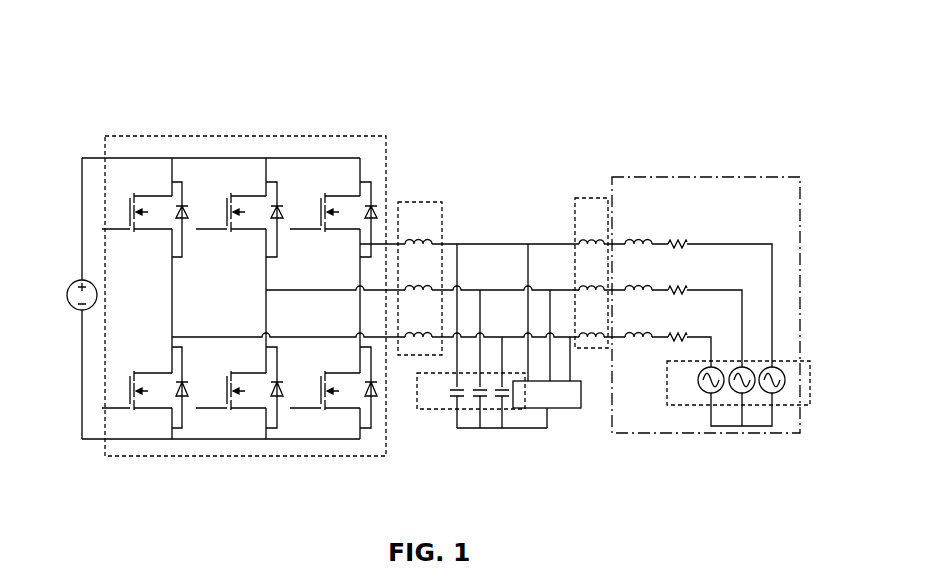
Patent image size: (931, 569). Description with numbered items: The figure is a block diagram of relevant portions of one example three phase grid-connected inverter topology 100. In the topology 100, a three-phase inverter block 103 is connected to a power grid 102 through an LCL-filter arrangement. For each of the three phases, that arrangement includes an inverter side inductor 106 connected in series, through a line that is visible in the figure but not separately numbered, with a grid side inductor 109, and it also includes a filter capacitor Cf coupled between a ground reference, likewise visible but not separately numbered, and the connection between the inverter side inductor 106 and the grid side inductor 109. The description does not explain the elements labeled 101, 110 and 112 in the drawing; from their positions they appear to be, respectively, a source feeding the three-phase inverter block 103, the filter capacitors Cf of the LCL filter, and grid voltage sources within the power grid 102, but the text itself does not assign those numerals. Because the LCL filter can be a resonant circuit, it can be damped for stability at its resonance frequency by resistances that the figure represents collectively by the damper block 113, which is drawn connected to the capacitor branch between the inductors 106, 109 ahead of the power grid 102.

The three phase grid-connected inverter topology 100 is at (741, 75).
The DC source 101 is at (78, 310).
The power grid 102 is at (772, 177).
The three-phase inverter block 103 is at (345, 135).
The inverter side inductor 106 is at (423, 202).
The grid side inductor 109 is at (597, 198).
The filter capacitors Cf 110 is at (443, 400).
The grid voltage sources Vg 112 is at (697, 405).
The damper block 113 is at (575, 408).